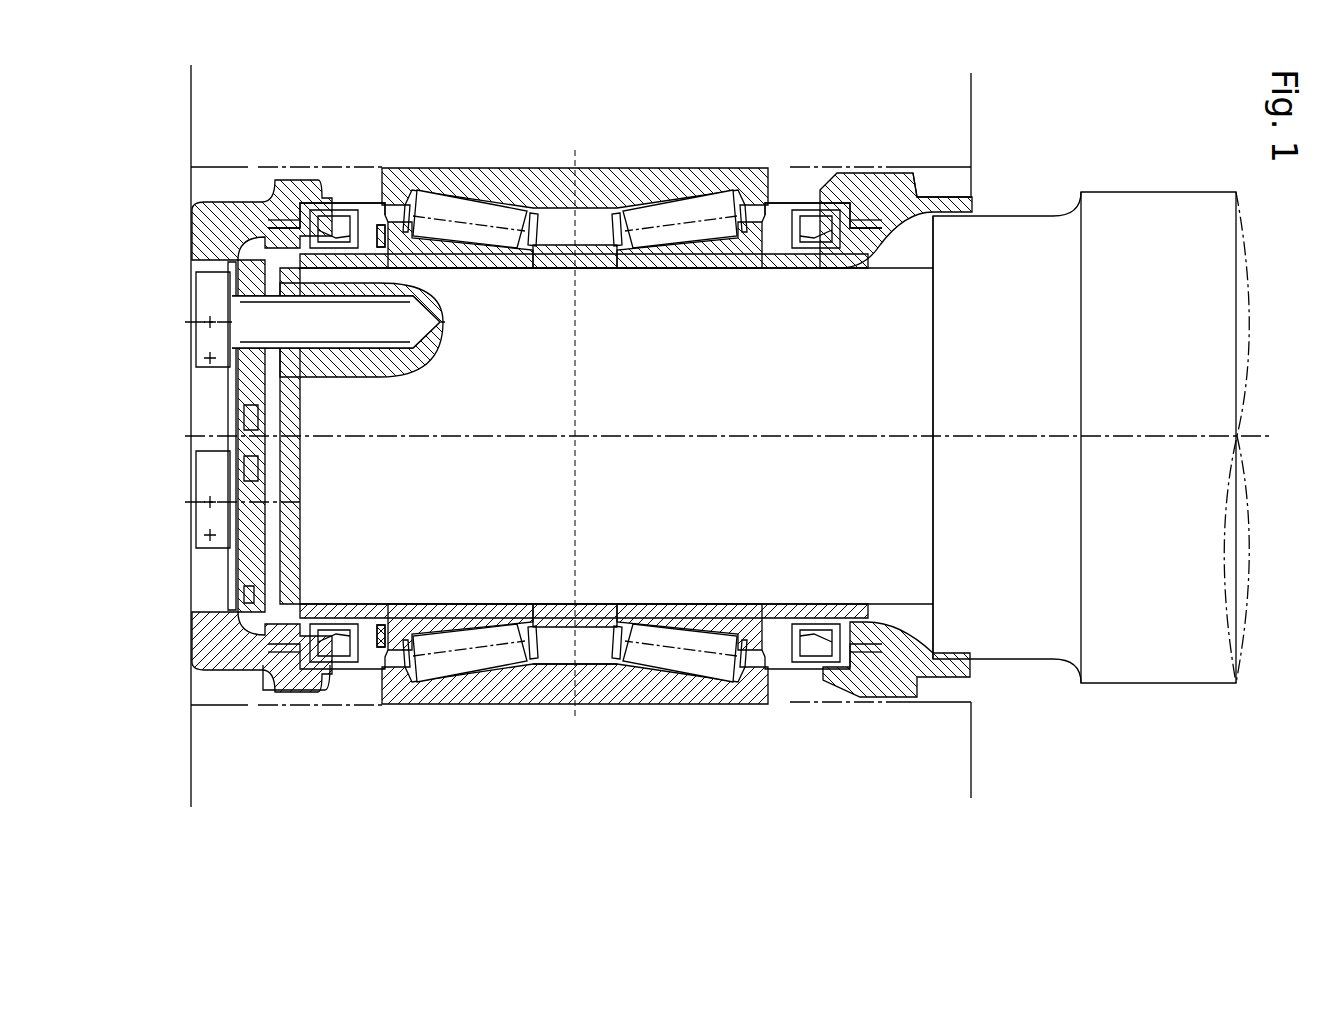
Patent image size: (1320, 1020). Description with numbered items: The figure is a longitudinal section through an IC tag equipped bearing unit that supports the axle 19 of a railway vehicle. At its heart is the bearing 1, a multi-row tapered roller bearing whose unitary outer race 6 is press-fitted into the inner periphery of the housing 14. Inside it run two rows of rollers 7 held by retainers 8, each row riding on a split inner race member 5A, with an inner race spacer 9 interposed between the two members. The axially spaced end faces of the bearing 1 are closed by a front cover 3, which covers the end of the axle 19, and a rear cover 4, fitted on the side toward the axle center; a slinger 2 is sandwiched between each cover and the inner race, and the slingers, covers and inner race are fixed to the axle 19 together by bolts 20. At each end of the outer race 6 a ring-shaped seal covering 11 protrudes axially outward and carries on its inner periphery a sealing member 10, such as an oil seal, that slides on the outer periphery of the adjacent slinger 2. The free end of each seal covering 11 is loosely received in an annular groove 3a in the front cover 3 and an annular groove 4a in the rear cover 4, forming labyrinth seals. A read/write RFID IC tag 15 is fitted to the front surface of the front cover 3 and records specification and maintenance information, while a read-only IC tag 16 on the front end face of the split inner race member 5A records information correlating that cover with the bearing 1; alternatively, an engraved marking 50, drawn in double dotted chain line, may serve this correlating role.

The bearing 1 is at (633, 165).
The slinger 2 is at (340, 270).
The front cover 3 is at (215, 212).
The annular groove 3a is at (260, 695).
The rear cover 4 is at (905, 190).
The annular groove 4a is at (940, 180).
The split inner race member 5A is at (437, 254).
The outer race 6 is at (525, 185).
The rollers 7 is at (683, 205).
The retainers 8 is at (603, 200).
The inner race spacer 9 is at (597, 690).
The sealing member 10 is at (330, 240).
The seal covering 11 is at (343, 203).
The housing 14 is at (240, 117).
The IC tag 15 is at (244, 592).
The IC tag 16 is at (380, 225).
The axle 19 is at (822, 408).
The bolts 20 is at (200, 305).
The marking 50 is at (372, 660).